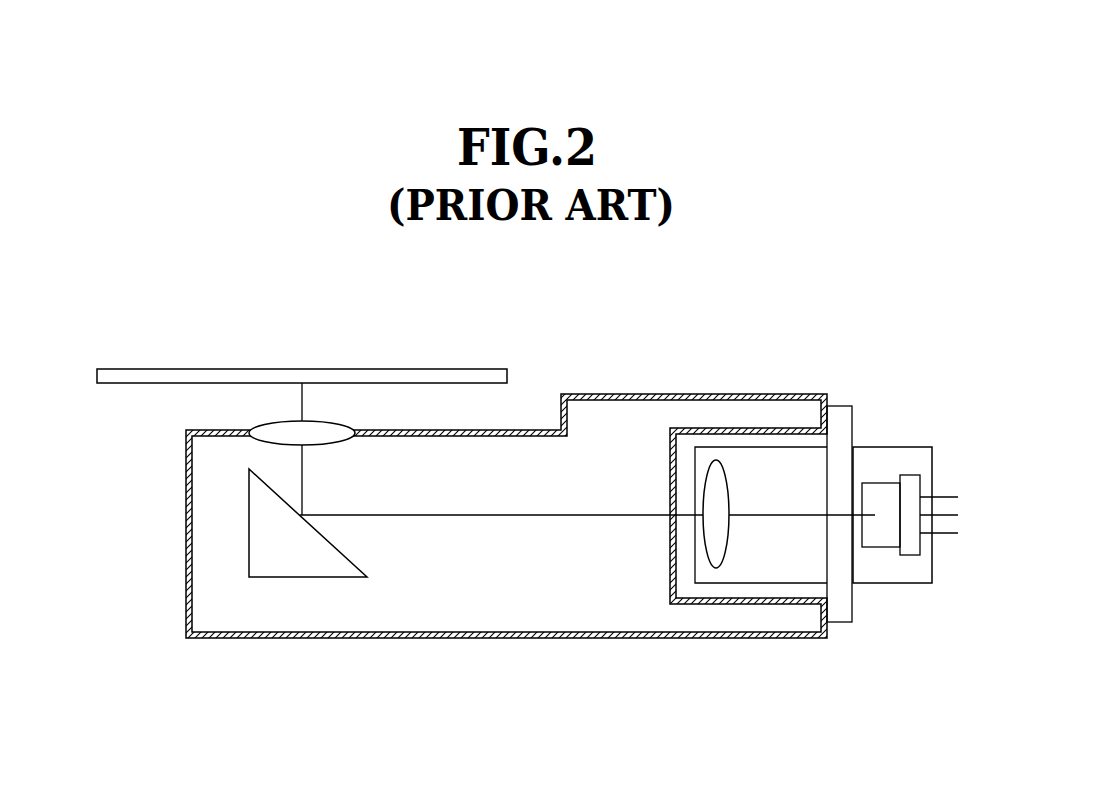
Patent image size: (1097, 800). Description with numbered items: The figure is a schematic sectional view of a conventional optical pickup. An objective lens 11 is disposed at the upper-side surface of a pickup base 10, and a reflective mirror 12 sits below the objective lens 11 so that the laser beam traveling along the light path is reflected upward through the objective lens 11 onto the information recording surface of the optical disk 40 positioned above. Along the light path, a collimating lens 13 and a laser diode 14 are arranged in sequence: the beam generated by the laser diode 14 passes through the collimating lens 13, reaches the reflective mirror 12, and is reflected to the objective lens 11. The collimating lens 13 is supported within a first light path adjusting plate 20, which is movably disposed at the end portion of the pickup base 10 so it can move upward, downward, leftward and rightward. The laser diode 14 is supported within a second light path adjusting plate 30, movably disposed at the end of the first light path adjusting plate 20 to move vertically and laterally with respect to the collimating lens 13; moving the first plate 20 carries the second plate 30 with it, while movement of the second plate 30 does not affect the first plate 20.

The pickup base 10 is at (352, 640).
The objective lens 11 is at (276, 430).
The reflective mirror 12 is at (254, 548).
The collimating lens 13 is at (718, 565).
The laser diode 14 is at (880, 545).
The first light path adjusting plate 20 is at (757, 460).
The second light path adjusting plate 30 is at (887, 458).
The optical disk 40 is at (223, 375).